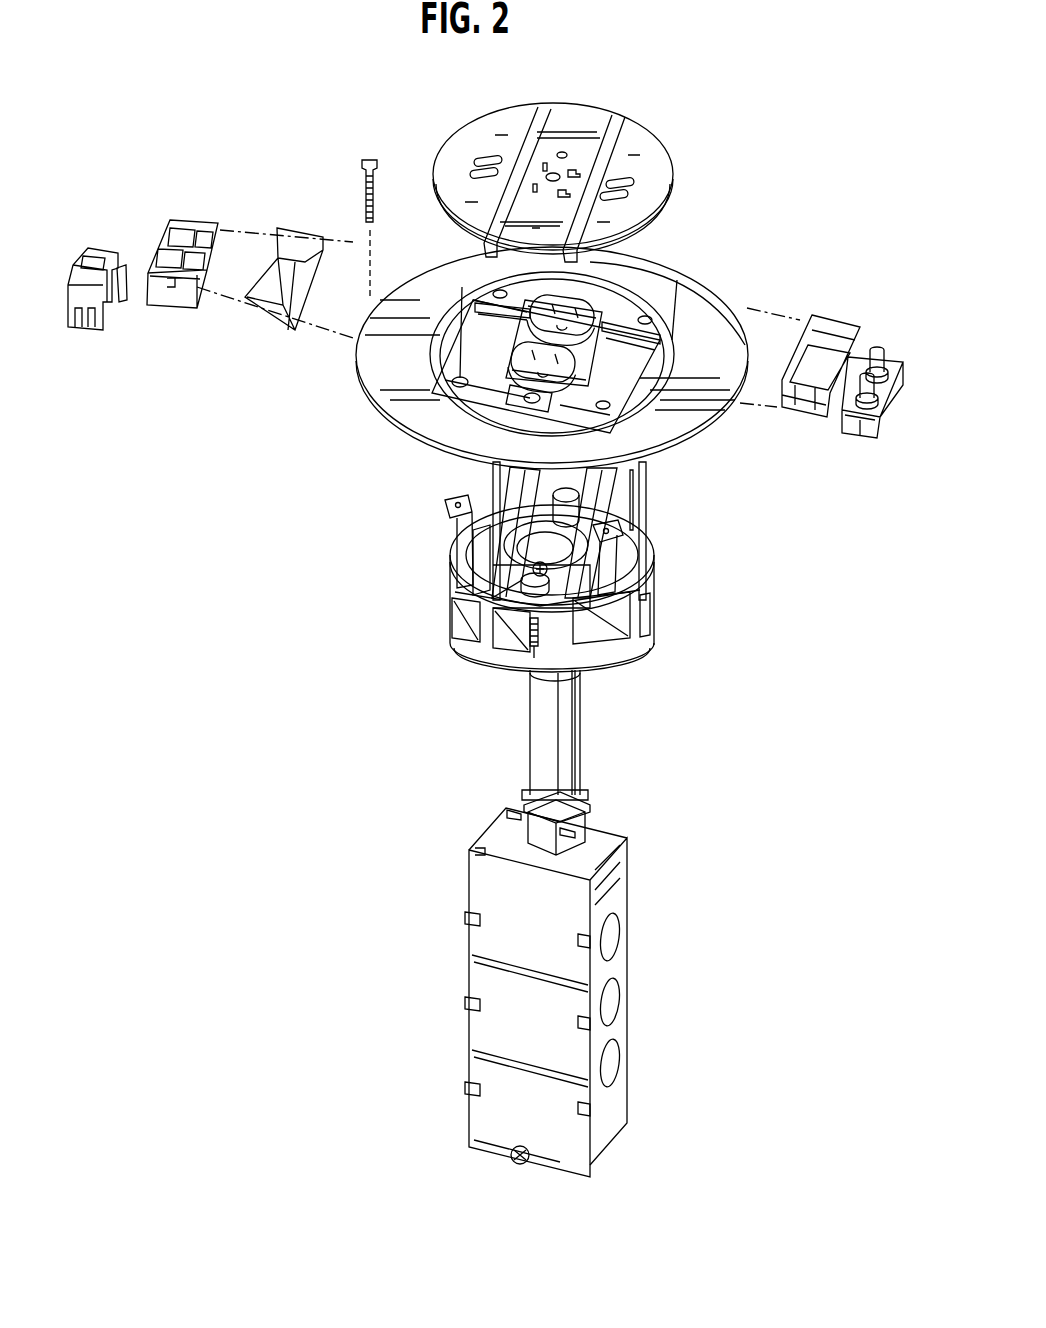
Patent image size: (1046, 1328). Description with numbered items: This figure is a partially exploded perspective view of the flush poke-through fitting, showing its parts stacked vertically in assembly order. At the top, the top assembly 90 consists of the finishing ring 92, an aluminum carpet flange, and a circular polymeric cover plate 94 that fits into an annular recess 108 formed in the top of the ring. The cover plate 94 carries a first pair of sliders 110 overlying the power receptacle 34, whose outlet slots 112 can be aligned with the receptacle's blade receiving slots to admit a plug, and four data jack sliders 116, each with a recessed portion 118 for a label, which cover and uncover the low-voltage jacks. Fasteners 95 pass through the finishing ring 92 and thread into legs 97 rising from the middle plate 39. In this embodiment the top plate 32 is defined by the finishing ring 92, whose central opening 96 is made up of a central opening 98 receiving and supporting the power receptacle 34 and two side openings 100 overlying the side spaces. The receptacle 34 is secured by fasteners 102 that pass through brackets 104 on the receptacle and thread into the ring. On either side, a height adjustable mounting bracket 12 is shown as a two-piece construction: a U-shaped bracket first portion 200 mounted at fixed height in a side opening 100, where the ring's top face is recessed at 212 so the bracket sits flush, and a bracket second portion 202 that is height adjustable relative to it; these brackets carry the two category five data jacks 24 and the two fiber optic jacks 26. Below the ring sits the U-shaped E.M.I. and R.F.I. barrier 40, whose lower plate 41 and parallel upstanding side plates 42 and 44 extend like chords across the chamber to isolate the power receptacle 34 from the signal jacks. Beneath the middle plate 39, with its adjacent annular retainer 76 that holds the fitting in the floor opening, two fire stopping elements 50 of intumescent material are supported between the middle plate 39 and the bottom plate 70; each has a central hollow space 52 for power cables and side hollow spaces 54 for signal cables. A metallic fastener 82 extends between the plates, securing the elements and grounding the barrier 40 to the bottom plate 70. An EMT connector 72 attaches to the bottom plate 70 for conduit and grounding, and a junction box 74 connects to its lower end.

The height adjustable mounting bracket 12 is at (231, 210).
The RJ-45 category 5 jacks 24 is at (100, 312).
The fiber optic jacks 26 is at (878, 352).
The top plate 32 is at (380, 402).
The power receptacle 34 is at (670, 290).
The middle plate 39 is at (647, 567).
The E.M.I. and/or R.F.I. barrier 40 is at (539, 596).
The lower plate 41 is at (492, 600).
The side plate 42 is at (597, 500).
The side plate 44 is at (510, 472).
The fire stopping elements 50 is at (647, 597).
The central hollow space 52 is at (505, 585).
The side hollow spaces 54 is at (613, 535).
The bottom plate 70 is at (613, 663).
The EMT connector 72 is at (567, 752).
The junction box 74 is at (622, 958).
The annular retainer 76 is at (452, 520).
The metallic fastener 82 is at (523, 643).
The top assembly 90 is at (592, 155).
The finishing ring 92 is at (658, 309).
The cover plate 94 is at (657, 187).
The fasteners 95 is at (375, 183).
The central opening 96 is at (612, 340).
The legs 97 is at (484, 560).
The central opening 98 is at (592, 304).
The side openings 100 is at (430, 360).
The fasteners 102 is at (528, 400).
The brackets 104 is at (462, 386).
The annular recess 108 is at (665, 340).
The sliders 110 is at (577, 172).
The outlet slots 112 is at (564, 151).
The data jack sliders 116 is at (476, 173).
The recessed portion 118 is at (617, 140).
The bracket first portion 200 is at (257, 300).
The bracket second portion 202 is at (172, 212).
The recess 212 is at (395, 300).